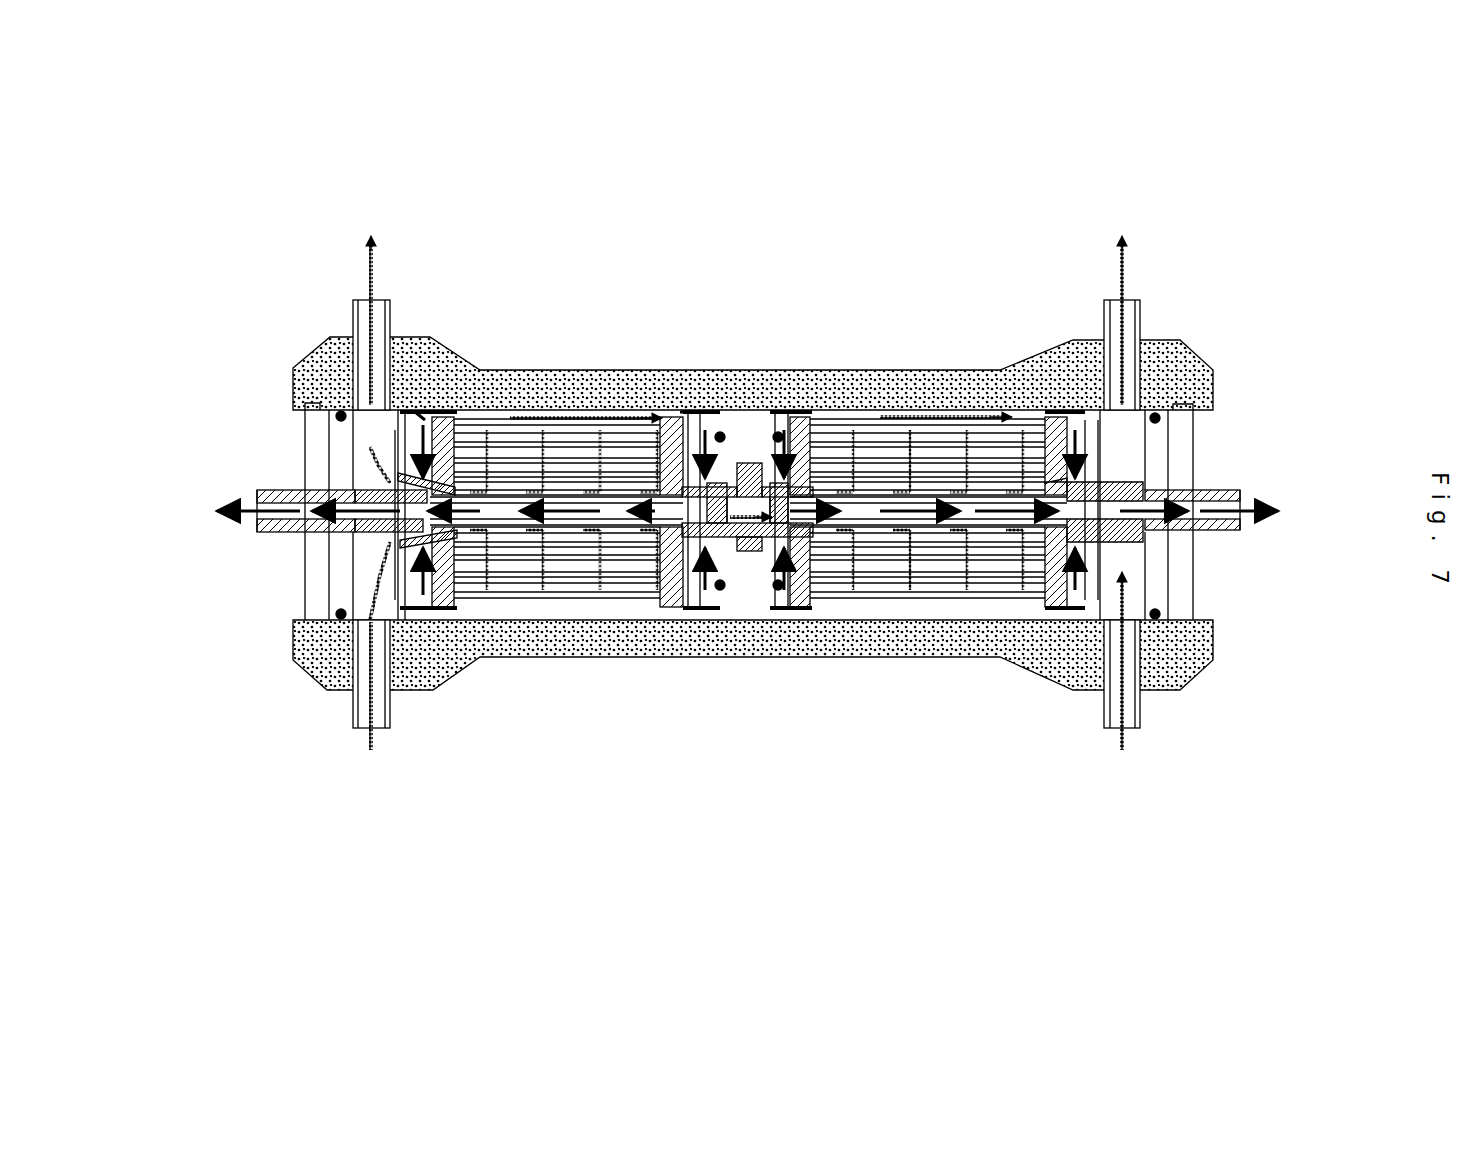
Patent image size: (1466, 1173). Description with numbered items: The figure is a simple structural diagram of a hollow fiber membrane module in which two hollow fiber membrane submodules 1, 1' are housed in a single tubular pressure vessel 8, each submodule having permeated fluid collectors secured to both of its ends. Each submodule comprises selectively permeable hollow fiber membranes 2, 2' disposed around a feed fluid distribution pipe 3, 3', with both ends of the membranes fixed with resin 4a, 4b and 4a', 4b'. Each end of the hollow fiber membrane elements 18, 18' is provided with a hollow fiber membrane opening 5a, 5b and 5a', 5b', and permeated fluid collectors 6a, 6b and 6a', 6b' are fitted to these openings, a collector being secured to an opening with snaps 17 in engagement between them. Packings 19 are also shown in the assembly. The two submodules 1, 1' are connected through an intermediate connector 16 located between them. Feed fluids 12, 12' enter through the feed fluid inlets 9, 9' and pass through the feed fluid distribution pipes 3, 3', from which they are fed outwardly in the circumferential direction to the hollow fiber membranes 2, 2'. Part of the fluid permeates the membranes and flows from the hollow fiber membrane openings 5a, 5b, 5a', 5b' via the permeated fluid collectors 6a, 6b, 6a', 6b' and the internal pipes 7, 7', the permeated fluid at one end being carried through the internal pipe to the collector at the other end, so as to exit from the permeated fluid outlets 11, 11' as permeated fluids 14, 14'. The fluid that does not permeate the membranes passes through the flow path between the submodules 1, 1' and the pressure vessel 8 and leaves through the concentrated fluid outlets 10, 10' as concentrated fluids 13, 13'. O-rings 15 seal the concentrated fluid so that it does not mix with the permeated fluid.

The hollow fiber membrane submodule 1 is at (927, 411).
The hollow fiber membrane submodule 1' is at (557, 411).
The hollow fiber membranes 2 is at (927, 382).
The hollow fiber membranes 2' is at (558, 414).
The feed fluid distribution pipe 3 is at (929, 438).
The feed fluid distribution pipe 3' is at (563, 423).
The resin 4a is at (798, 438).
The resin 4a' is at (428, 419).
The resin 4b is at (1039, 419).
The resin 4b' is at (681, 420).
The hollow fiber membrane opening 5a is at (1057, 620).
The hollow fiber membrane opening 5a' is at (312, 546).
The hollow fiber membrane opening 5b is at (826, 638).
The hollow fiber membrane opening 5b' is at (729, 635).
The permeated fluid collector 6a is at (1068, 739).
The permeated fluid collector 6a' is at (302, 602).
The permeated fluid collector 6b is at (800, 583).
The permeated fluid collector 6b' is at (718, 583).
The internal pipe 7 is at (928, 629).
The internal pipe 7' is at (555, 642).
The pressure vessel 8 is at (985, 662).
The feed fluid inlet 9 is at (319, 768).
The feed fluid inlet 9' is at (301, 235).
The concentrated fluid outlet 10 is at (1178, 236).
The concentrated fluid outlet 10' is at (1210, 753).
The permeated fluid outlet 11 is at (1203, 459).
The permeated fluid outlet 11' is at (292, 381).
The feed fluid 12 is at (370, 705).
The feed fluid 12' is at (365, 305).
The concentrated fluid 13 is at (1112, 293).
The concentrated fluid 13' is at (1121, 694).
The permeated fluid 14 is at (1238, 510).
The permeated fluid 14' is at (265, 504).
The O-rings 15 is at (412, 620).
The intermediate connector 16 is at (750, 555).
The snaps 17 is at (702, 432).
The hollow fiber membrane element 18 is at (910, 758).
The hollow fiber membrane element 18' is at (613, 755).
The packings 19 is at (395, 612).